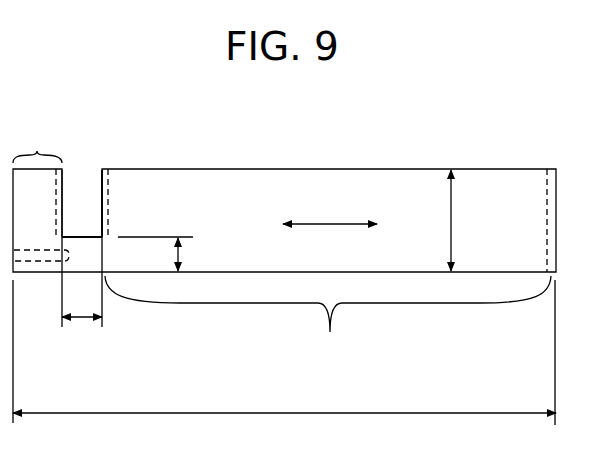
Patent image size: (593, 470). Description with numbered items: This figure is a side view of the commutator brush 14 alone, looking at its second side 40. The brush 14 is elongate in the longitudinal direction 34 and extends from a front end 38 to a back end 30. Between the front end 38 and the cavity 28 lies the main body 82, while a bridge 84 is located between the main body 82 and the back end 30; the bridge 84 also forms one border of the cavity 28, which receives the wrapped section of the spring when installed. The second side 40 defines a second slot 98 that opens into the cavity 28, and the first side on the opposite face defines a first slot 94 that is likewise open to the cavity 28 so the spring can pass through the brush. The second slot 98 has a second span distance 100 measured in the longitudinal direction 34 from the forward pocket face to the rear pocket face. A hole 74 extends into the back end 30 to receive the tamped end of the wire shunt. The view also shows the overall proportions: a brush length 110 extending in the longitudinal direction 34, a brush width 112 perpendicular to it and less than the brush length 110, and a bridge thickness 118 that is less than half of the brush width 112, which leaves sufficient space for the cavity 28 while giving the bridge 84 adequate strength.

The commutator brush 14 is at (400, 168).
The cavity 28 is at (75, 178).
The back end 30 is at (37, 179).
The bridge 84 is at (88, 236).
The second side 40 is at (217, 197).
The first slot 94 is at (110, 190).
The second slot 98 is at (102, 213).
The bridge thickness 118 is at (180, 254).
The longitudinal direction 34 is at (333, 222).
The brush width 112 is at (452, 218).
The front end 38 is at (548, 208).
The hole 74 is at (38, 262).
The second span distance 100 is at (82, 320).
The main body 82 is at (328, 318).
The brush length 110 is at (235, 411).